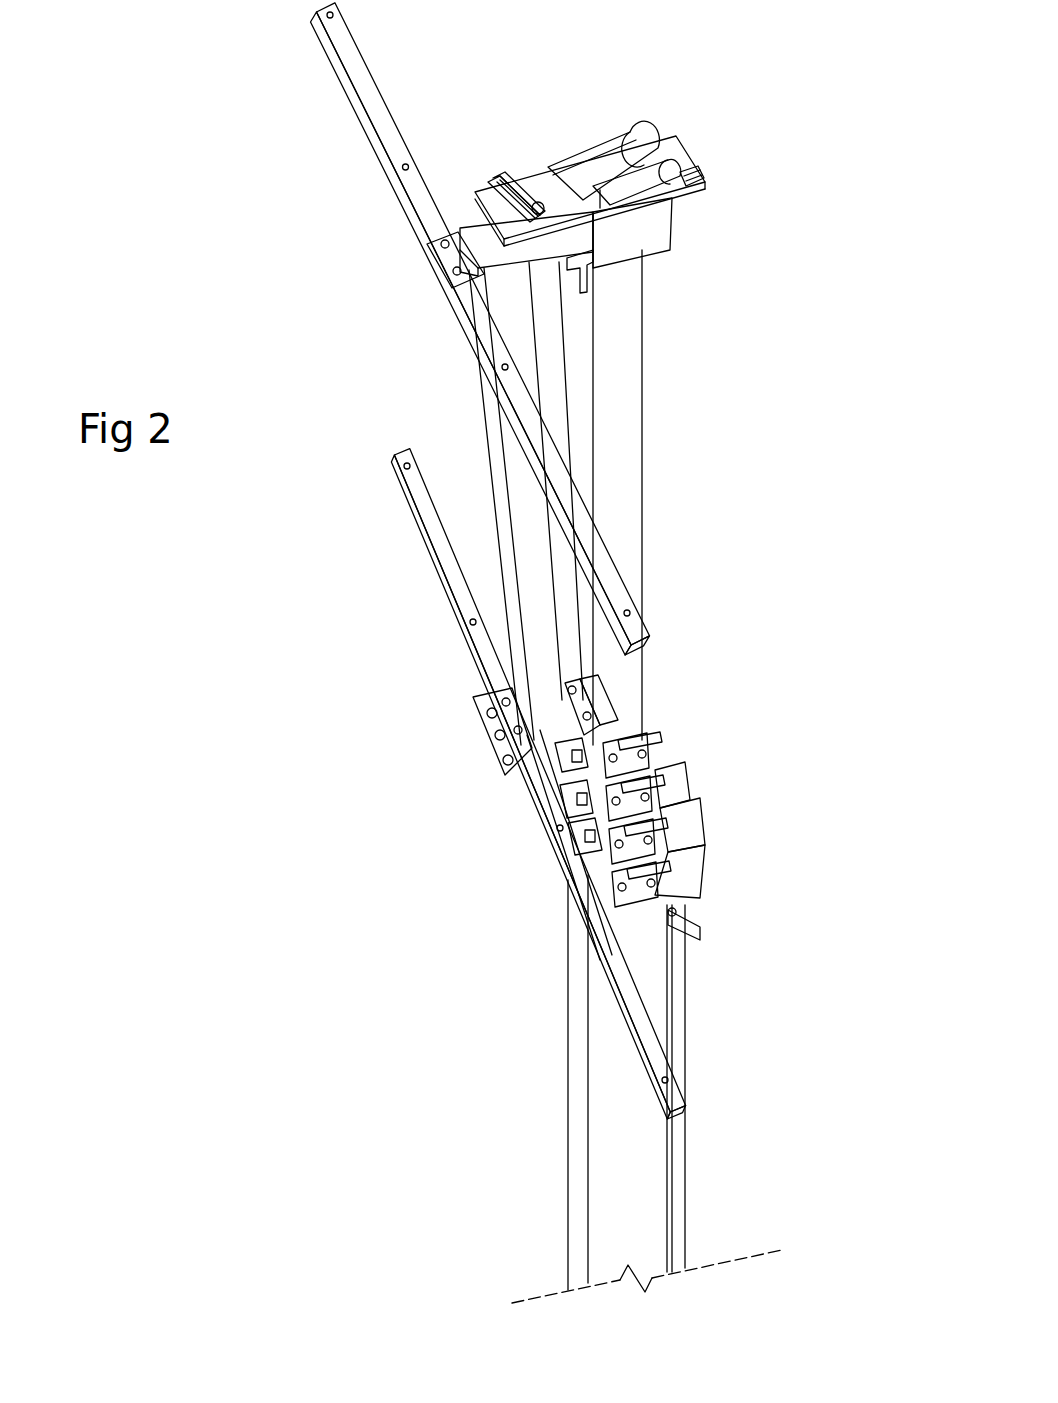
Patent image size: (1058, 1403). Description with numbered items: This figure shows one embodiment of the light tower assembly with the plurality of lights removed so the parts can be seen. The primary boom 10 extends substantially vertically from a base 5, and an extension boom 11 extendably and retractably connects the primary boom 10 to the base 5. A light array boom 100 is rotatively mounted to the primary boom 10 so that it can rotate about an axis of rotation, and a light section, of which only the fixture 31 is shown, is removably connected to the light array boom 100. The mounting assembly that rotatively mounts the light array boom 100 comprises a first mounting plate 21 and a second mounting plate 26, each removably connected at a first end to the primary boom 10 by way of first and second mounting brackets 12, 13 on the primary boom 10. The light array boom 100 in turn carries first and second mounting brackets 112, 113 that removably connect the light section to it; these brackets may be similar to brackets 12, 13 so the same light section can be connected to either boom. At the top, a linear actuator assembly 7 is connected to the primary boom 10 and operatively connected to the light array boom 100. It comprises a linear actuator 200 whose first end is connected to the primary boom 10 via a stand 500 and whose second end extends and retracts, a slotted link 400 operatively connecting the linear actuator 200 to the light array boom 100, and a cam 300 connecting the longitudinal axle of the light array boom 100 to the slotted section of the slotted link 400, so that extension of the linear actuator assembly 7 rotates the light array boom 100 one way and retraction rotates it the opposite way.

The linear actuator assembly 7 is at (700, 102).
The fixture 31 is at (345, 62).
The slotted link 400 is at (505, 173).
The stand 500 is at (605, 163).
The cam 300 is at (497, 200).
The linear actuator 200 is at (676, 195).
The second mounting plate 26 is at (488, 240).
The second mounting bracket of light array boom 113 is at (452, 265).
The second mounting bracket of primary boom 13 is at (572, 258).
The light array boom 100 is at (493, 460).
The primary boom 10 is at (623, 495).
The first mounting bracket of primary boom 12 is at (585, 705).
The extension boom 11 is at (632, 780).
The first mounting bracket of light array boom 112 is at (488, 712).
The first mounting plate 21 is at (522, 768).
The base 5 is at (658, 983).